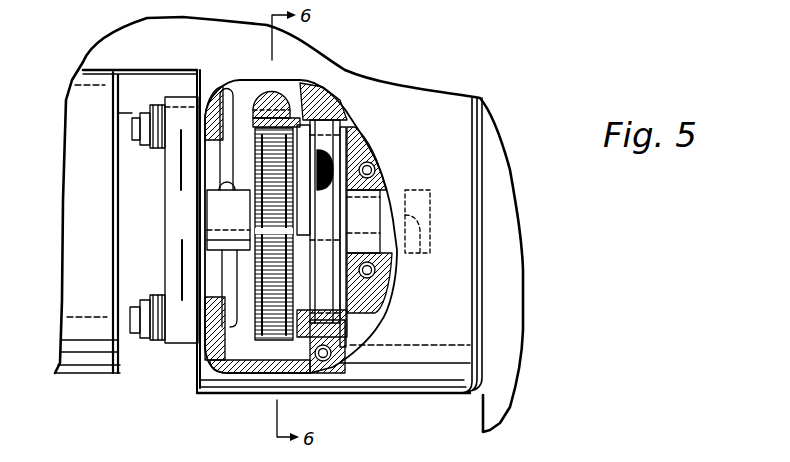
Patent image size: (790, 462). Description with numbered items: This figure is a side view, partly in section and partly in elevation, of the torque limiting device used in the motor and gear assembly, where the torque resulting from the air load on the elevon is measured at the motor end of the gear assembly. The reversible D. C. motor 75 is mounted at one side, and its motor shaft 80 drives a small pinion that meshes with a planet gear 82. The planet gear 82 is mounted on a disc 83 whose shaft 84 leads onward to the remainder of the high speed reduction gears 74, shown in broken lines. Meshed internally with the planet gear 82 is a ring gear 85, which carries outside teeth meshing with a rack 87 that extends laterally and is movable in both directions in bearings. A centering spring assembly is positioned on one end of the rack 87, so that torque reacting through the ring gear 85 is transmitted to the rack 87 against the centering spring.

The reversible D. C. motor 75 is at (66, 378).
The ring gear 85 is at (262, 333).
The rack 87 is at (283, 85).
The motor shaft 80 is at (229, 208).
The planet gear 82 is at (295, 138).
The shaft 84 is at (330, 217).
The disc 83 is at (303, 300).
The high speed reduction gears 74 is at (417, 236).